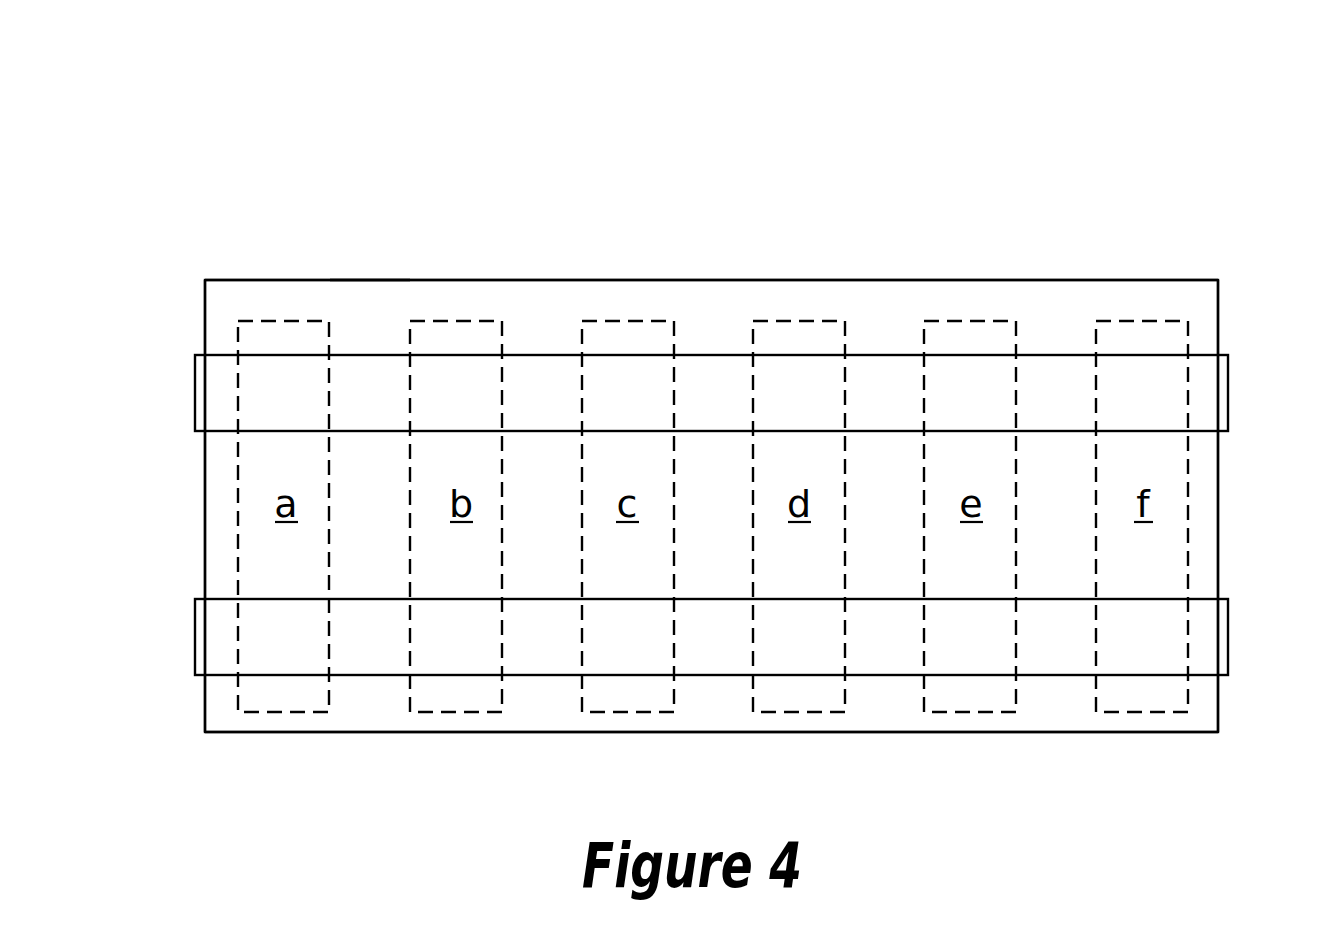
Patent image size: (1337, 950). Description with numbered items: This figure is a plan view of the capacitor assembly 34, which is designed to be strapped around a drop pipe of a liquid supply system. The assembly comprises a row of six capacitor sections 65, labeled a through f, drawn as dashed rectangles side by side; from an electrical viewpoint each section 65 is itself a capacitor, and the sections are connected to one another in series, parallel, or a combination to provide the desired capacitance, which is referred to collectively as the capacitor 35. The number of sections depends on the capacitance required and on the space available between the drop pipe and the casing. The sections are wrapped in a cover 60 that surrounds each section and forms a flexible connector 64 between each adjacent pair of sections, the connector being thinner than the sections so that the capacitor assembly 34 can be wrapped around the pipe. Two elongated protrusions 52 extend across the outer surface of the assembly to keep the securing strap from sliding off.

The capacitor assembly 34 is at (160, 312).
The capacitor 35 is at (692, 145).
The cover 60 is at (273, 300).
The flexible connector 64 is at (370, 338).
The capacitor sections 65 is at (617, 323).
The protrusions 52 is at (1208, 388).